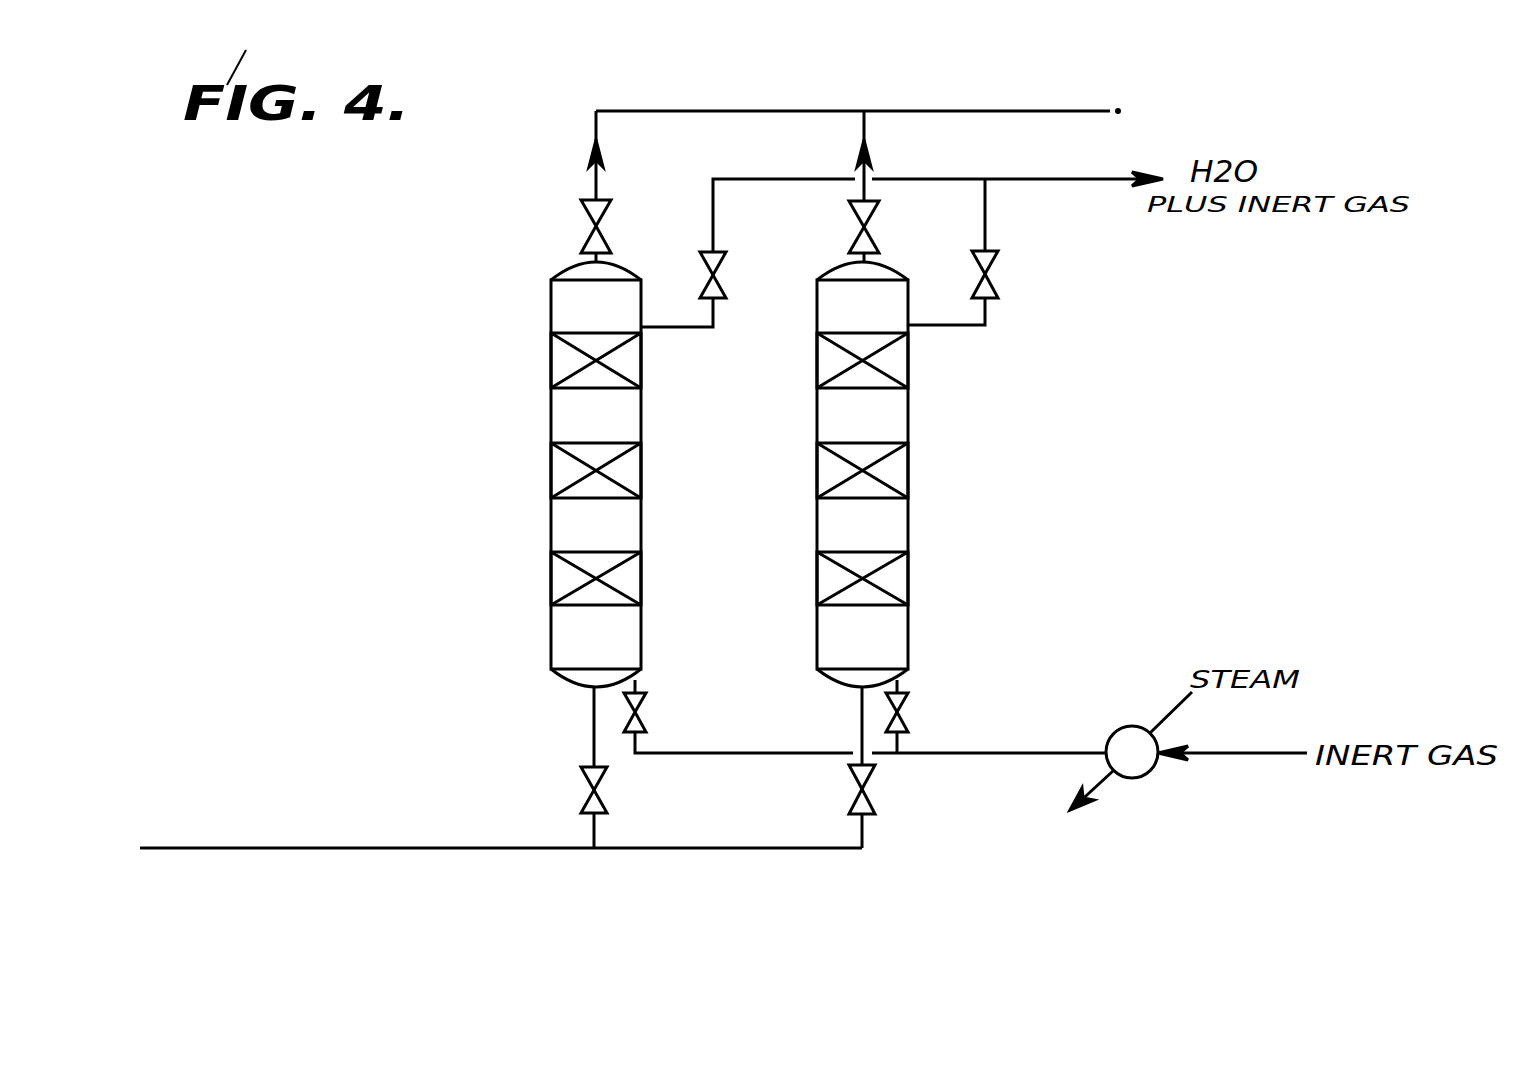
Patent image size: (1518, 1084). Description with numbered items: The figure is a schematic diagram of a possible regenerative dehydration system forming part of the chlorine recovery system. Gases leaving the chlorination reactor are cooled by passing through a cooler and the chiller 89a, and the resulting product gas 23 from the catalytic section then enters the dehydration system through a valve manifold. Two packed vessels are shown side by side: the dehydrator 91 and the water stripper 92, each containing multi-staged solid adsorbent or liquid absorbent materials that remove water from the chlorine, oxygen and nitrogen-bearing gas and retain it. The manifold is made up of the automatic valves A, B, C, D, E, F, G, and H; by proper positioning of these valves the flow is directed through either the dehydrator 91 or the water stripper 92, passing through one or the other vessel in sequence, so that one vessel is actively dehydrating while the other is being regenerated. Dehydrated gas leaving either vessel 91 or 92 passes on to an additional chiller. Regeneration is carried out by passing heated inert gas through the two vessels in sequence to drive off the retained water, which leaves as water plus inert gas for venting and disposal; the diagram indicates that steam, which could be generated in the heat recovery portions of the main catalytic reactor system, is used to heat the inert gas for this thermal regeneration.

The dehydrator 91 is at (563, 423).
The water stripper 92 is at (900, 412).
The product gas 23 is at (501, 820).
The chiller 89a is at (292, 871).
The automatic valve A is at (575, 767).
The automatic valve B is at (580, 231).
The automatic valve C is at (879, 767).
The automatic valve D is at (876, 231).
The automatic valve E is at (738, 716).
The automatic valve F is at (748, 253).
The automatic valve G is at (971, 252).
The automatic valve H is at (913, 716).